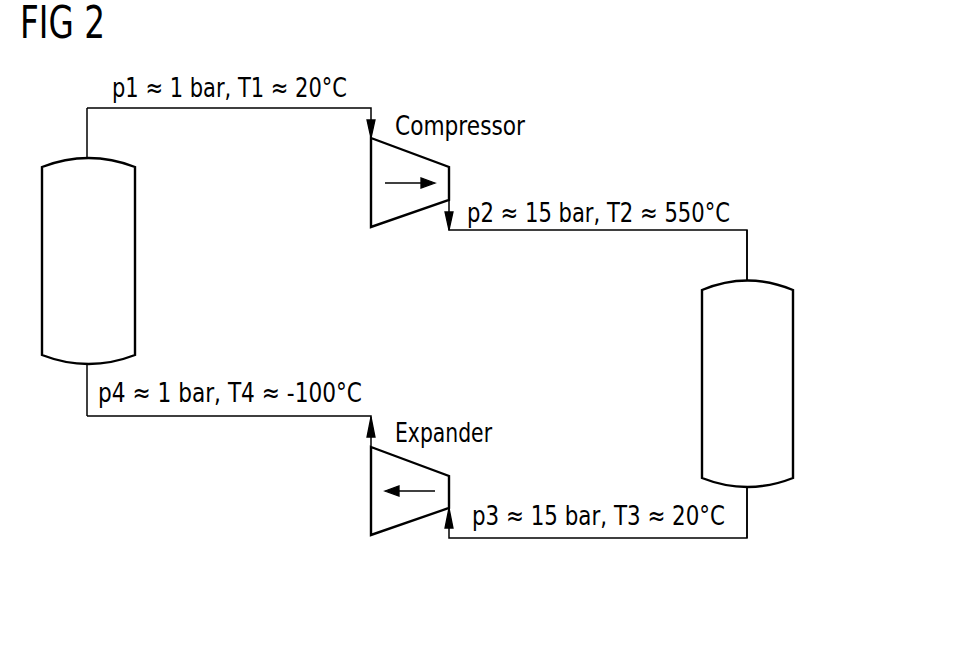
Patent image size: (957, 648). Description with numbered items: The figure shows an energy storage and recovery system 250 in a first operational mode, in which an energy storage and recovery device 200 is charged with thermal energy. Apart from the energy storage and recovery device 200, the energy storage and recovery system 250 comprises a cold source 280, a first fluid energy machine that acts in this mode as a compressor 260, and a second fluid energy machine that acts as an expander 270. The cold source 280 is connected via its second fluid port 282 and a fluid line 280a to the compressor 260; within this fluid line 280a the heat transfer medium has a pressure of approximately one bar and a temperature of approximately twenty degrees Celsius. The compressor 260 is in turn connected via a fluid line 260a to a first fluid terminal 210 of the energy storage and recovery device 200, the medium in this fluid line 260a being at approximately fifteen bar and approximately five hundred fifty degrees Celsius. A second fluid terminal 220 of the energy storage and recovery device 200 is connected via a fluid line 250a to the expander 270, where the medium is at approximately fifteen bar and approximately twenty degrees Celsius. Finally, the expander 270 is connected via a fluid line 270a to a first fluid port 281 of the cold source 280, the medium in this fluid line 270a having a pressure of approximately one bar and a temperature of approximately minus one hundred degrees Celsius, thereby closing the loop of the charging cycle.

The energy storage and recovery system 250 is at (737, 120).
The cold source 280 is at (137, 262).
The second fluid port 282 is at (87, 157).
The first fluid port 281 is at (87, 367).
The fluid line 280a is at (238, 109).
The compressor 260 is at (371, 182).
The fluid line 260a is at (600, 231).
The first fluid terminal 210 is at (750, 280).
The energy storage and recovery device 200 is at (702, 383).
The second fluid terminal 220 is at (750, 488).
The fluid line 250a is at (600, 540).
The expander 270 is at (371, 491).
The fluid line 270a is at (238, 417).